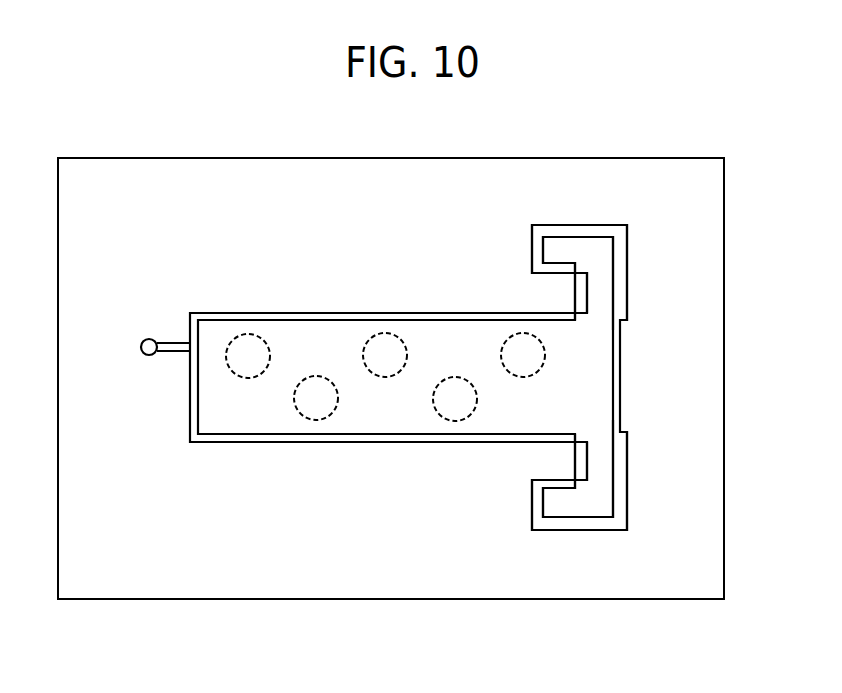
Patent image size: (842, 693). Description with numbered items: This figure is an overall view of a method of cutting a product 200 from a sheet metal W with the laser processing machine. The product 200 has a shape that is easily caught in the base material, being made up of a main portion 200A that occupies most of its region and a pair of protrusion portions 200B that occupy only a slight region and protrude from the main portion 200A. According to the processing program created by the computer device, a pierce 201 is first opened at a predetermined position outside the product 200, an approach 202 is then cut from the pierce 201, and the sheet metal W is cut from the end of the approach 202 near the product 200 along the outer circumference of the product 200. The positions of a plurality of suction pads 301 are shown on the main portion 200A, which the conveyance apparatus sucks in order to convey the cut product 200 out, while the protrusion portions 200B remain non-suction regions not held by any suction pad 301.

The sheet metal W is at (630, 157).
The product 200 is at (311, 332).
The main portion 200A is at (380, 418).
The protrusion portion 200B is at (602, 282).
The pierce 201 is at (149, 338).
The approach 202 is at (163, 354).
The suction pad 301 is at (249, 334).